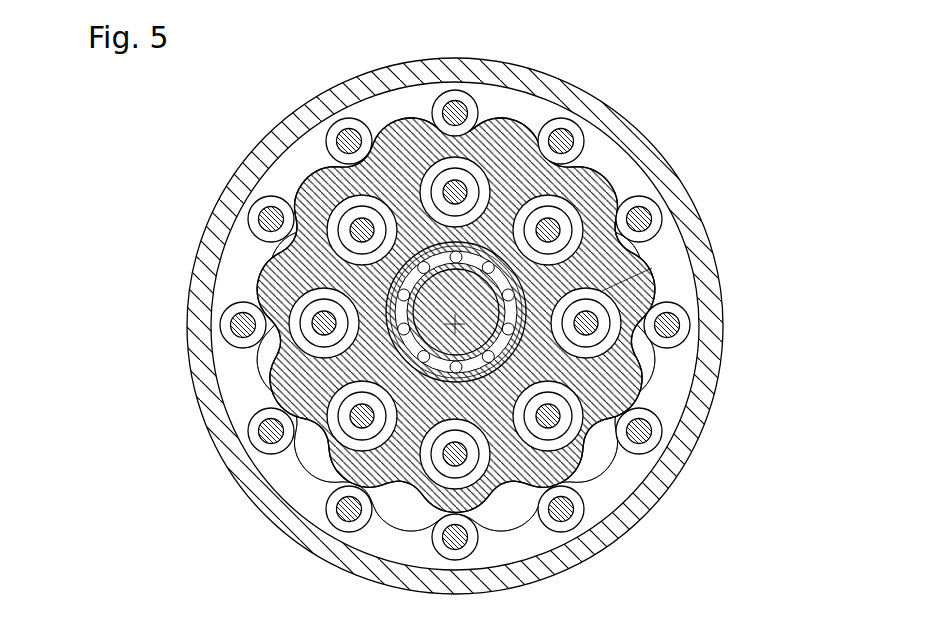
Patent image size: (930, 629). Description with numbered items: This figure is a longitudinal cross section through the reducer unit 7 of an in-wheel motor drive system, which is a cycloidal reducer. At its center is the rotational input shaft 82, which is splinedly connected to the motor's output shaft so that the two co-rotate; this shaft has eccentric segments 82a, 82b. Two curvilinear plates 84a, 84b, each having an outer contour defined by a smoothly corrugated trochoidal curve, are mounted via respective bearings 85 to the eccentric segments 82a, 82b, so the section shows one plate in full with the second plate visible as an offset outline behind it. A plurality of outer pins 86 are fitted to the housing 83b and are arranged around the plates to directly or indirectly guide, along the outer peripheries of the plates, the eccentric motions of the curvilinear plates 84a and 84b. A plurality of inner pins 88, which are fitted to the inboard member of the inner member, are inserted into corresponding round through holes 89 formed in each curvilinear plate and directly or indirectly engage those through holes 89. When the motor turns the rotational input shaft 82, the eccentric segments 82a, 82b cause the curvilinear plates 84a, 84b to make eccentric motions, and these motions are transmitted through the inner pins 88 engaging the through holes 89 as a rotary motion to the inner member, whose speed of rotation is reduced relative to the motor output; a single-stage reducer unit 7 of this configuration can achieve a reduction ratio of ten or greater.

The reducer unit 7 is at (272, 122).
The rotational input shaft 82 is at (121, 372).
The eccentric segment 82a is at (273, 398).
The eccentric segment 82b is at (283, 377).
The housing 83b is at (238, 185).
The curvilinear plate 84a is at (677, 225).
The curvilinear plate 84b is at (592, 180).
The bearing 85 is at (395, 277).
The outer pin 86 is at (455, 93).
The inner pin 88 is at (546, 228).
The through hole 89 is at (603, 290).